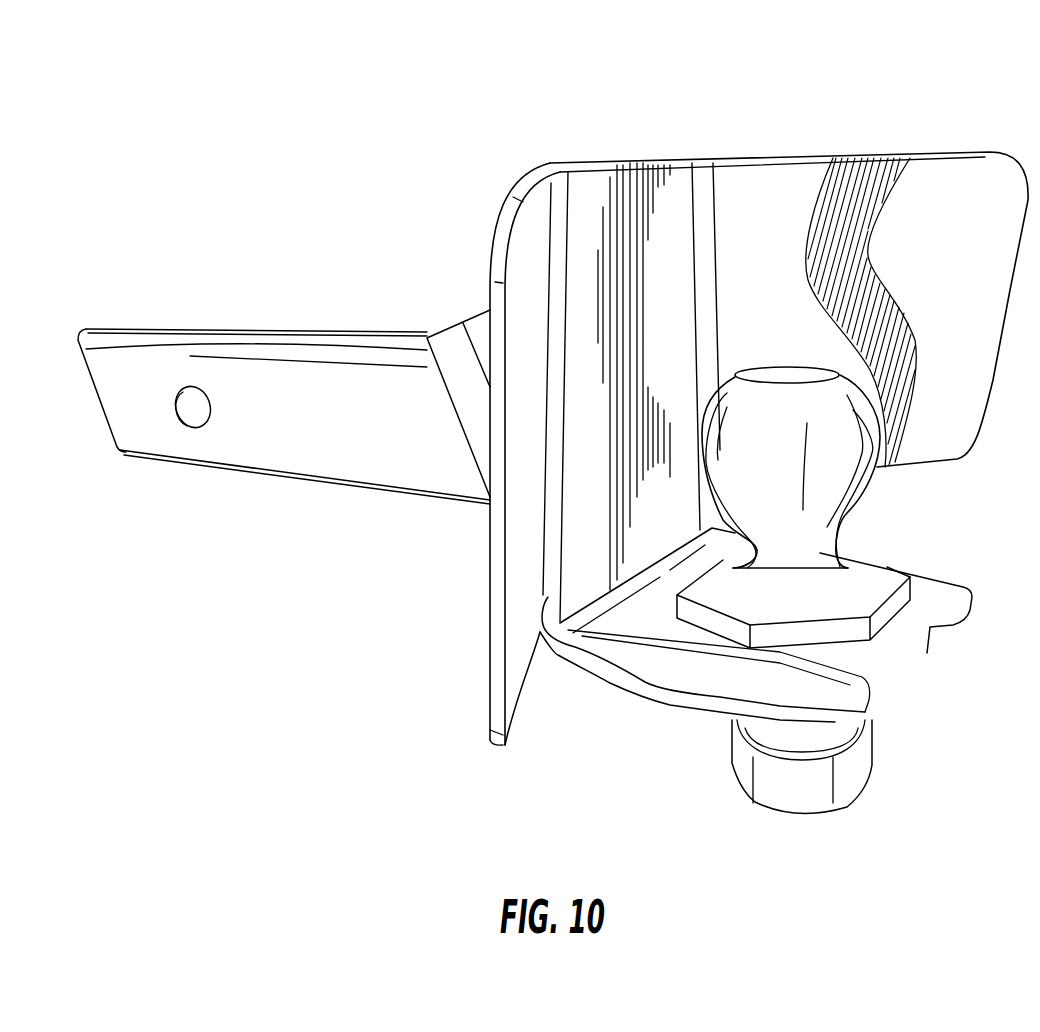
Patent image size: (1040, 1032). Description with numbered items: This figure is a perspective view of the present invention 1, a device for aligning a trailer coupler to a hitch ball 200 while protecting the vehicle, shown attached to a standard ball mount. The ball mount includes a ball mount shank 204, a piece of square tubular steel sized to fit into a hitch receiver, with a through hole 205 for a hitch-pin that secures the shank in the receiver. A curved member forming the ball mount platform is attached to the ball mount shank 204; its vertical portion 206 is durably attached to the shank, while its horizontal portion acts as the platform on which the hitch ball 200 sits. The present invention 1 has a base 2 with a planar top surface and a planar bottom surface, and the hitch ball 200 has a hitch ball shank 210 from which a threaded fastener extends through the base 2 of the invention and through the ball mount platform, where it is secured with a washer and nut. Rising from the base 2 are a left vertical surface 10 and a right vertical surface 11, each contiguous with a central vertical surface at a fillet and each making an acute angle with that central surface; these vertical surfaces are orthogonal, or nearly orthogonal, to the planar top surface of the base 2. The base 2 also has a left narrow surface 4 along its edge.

The present invention 1 is at (847, 88).
The left vertical surface 10 is at (513, 563).
The right vertical surface 11 is at (918, 207).
The base 2 is at (847, 657).
The hitch ball 200 is at (823, 470).
The hitch ball shank 210 is at (818, 580).
The left narrow surface 4 is at (818, 697).
The ball mount shank 204 is at (303, 335).
The through hole 205 is at (190, 397).
The vertical portion 206 is at (453, 357).